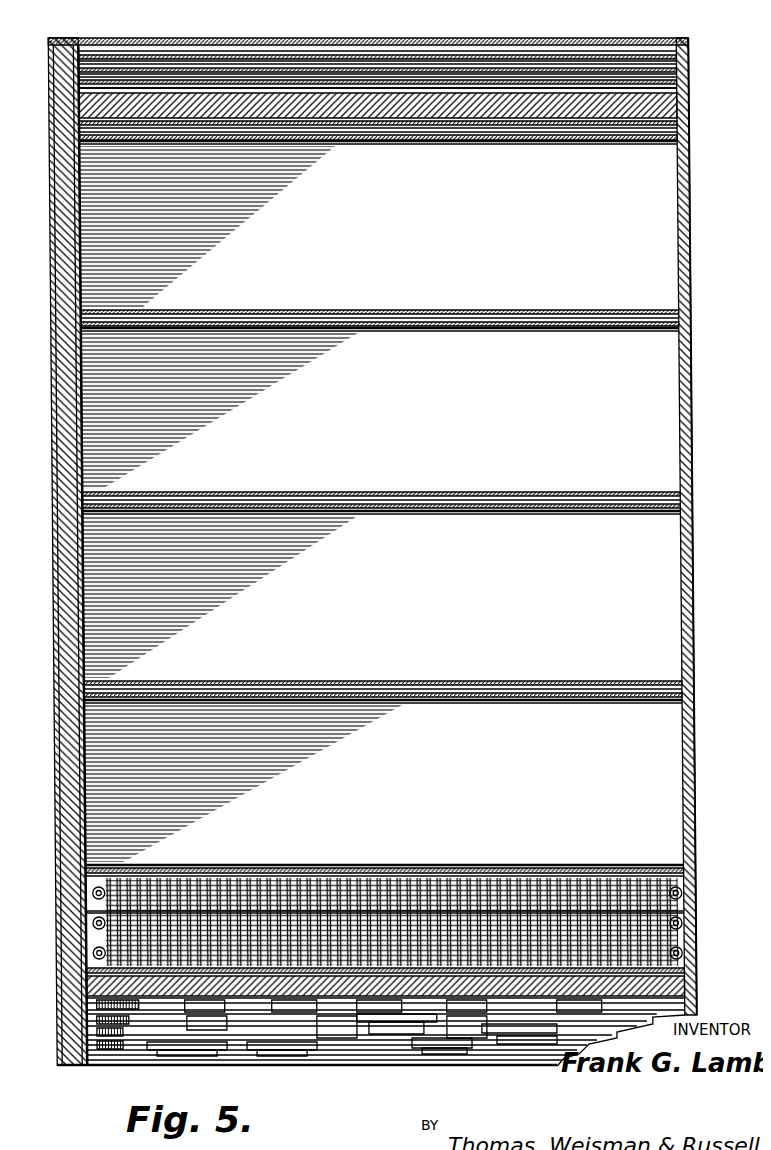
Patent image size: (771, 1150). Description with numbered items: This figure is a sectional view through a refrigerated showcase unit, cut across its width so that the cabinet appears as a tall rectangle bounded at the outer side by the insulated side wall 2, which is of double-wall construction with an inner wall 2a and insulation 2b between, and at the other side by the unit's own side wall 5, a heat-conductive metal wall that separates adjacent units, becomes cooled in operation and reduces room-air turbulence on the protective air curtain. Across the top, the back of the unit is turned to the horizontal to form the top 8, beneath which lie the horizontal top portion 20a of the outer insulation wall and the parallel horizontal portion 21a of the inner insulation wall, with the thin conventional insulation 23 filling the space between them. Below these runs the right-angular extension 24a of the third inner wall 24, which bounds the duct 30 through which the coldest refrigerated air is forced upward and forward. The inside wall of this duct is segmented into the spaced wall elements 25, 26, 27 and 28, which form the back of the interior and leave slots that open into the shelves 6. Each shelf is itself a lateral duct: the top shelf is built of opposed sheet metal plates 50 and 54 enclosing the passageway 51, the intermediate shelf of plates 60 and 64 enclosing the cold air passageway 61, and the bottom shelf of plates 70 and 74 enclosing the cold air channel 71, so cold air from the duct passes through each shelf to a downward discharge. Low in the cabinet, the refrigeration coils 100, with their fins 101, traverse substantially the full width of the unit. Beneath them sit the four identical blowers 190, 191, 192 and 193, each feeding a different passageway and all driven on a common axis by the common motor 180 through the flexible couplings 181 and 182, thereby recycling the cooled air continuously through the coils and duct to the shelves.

The insulated side wall 2 is at (44, 642).
The inner wall 2a is at (72, 547).
The insulation 2b is at (66, 603).
The side wall 5 is at (668, 604).
The top 8 is at (367, 31).
The top portion of outer wall 20a is at (481, 100).
The horizontal portion of inner wall 21a is at (551, 114).
The insulation 23 is at (354, 104).
The right-angular extension of wall 24 24a is at (400, 100).
The duct 30 is at (613, 124).
The wall segment 25 is at (451, 212).
The wall segment 26 is at (445, 404).
The wall segment 27 is at (443, 594).
The wall segment 28 is at (451, 782).
The upper plate 50 is at (406, 303).
The passageway 51 is at (448, 314).
The lower plate 54 is at (569, 319).
The shelves 6 is at (325, 476).
The upper plate 60 is at (550, 485).
The cold air passageway 61 is at (336, 498).
The lower plate 64 is at (544, 502).
The upper plate 70 is at (482, 674).
The cold air channel 71 is at (386, 688).
The lower plate 74 is at (522, 692).
The third inner wall 24 is at (473, 857).
The fins 101 is at (148, 860).
The refrigeration coils 100 is at (682, 885).
The blower 190 is at (684, 1001).
The motor 180 is at (372, 1010).
The flexible coupling 181 is at (320, 1022).
The flexible coupling 182 is at (418, 1038).
The blower 191 is at (482, 1022).
The blower 192 is at (262, 1040).
The blower 193 is at (196, 1040).